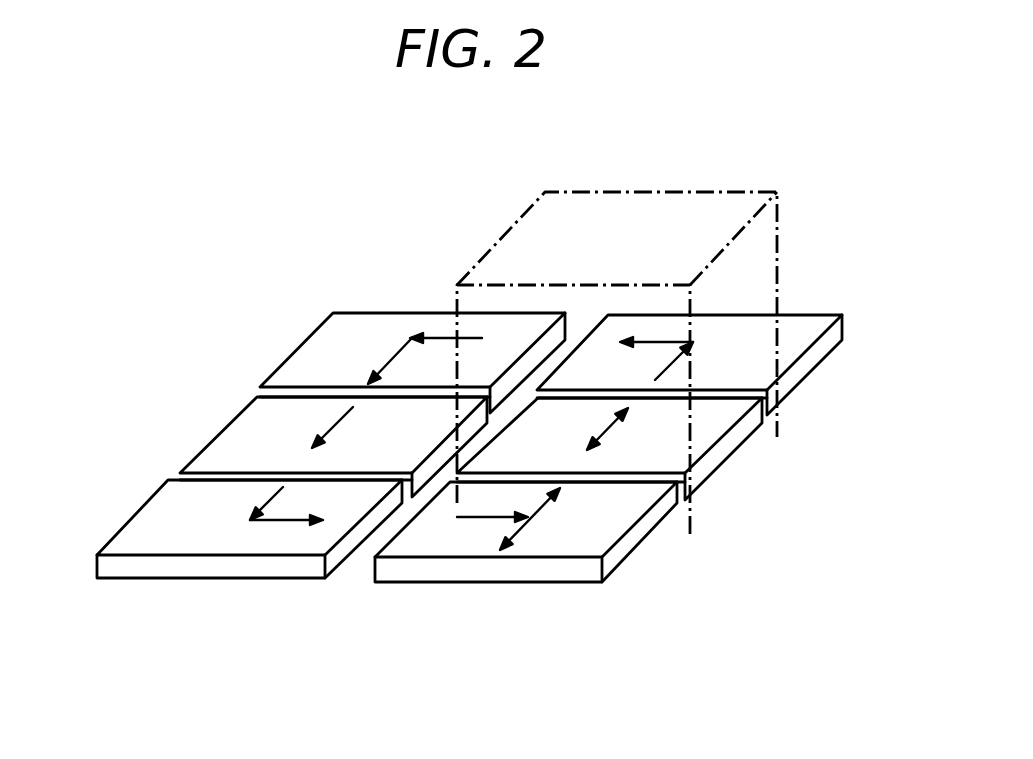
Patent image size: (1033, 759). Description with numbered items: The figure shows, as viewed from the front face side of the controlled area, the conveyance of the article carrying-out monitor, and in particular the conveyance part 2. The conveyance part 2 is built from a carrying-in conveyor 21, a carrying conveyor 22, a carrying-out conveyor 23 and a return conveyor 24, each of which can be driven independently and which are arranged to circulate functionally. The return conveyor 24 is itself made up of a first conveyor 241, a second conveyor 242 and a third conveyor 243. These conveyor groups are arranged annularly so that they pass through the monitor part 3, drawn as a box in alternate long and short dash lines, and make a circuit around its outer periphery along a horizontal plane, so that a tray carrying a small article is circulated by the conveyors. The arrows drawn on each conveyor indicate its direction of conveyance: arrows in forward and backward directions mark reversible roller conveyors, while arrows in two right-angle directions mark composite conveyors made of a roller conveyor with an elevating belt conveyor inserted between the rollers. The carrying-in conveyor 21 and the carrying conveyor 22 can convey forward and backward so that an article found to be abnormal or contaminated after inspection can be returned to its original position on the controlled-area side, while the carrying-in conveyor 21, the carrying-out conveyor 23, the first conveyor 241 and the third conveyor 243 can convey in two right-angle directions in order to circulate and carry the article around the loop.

The conveyance part 2 is at (767, 673).
The monitor part 3 is at (572, 228).
The carrying-in conveyor 21 is at (603, 530).
The carrying conveyor 22 is at (705, 425).
The carrying-out conveyor 23 is at (788, 335).
The return conveyor 24 is at (82, 342).
The first conveyor 241 is at (322, 358).
The second conveyor 242 is at (253, 432).
The third conveyor 243 is at (180, 513).